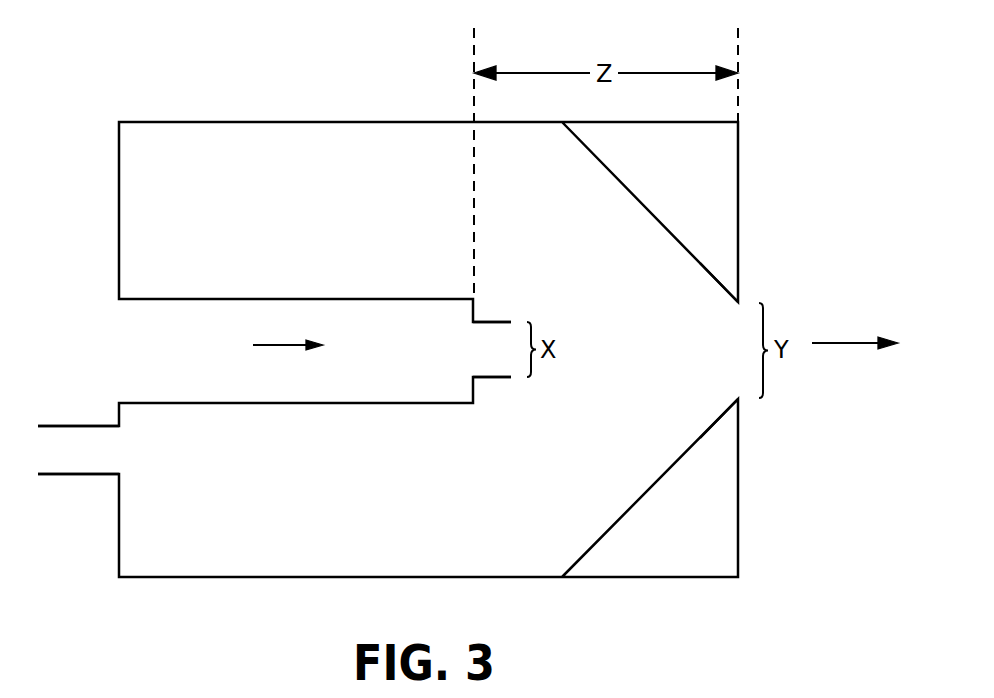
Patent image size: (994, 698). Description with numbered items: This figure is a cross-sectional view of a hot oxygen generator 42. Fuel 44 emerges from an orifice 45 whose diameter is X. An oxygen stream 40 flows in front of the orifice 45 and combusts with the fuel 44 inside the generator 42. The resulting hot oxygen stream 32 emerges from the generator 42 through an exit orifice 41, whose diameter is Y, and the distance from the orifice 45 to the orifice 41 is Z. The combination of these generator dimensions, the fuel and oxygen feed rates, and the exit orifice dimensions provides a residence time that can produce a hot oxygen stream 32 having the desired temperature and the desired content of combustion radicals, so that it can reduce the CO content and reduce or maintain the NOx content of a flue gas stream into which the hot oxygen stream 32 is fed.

The hot oxygen generator 42 is at (329, 113).
The oxygen stream 40 is at (121, 453).
The fuel 44 is at (270, 345).
The orifice 45 is at (496, 343).
The orifice 41 is at (745, 340).
The hot oxygen stream 32 is at (855, 329).